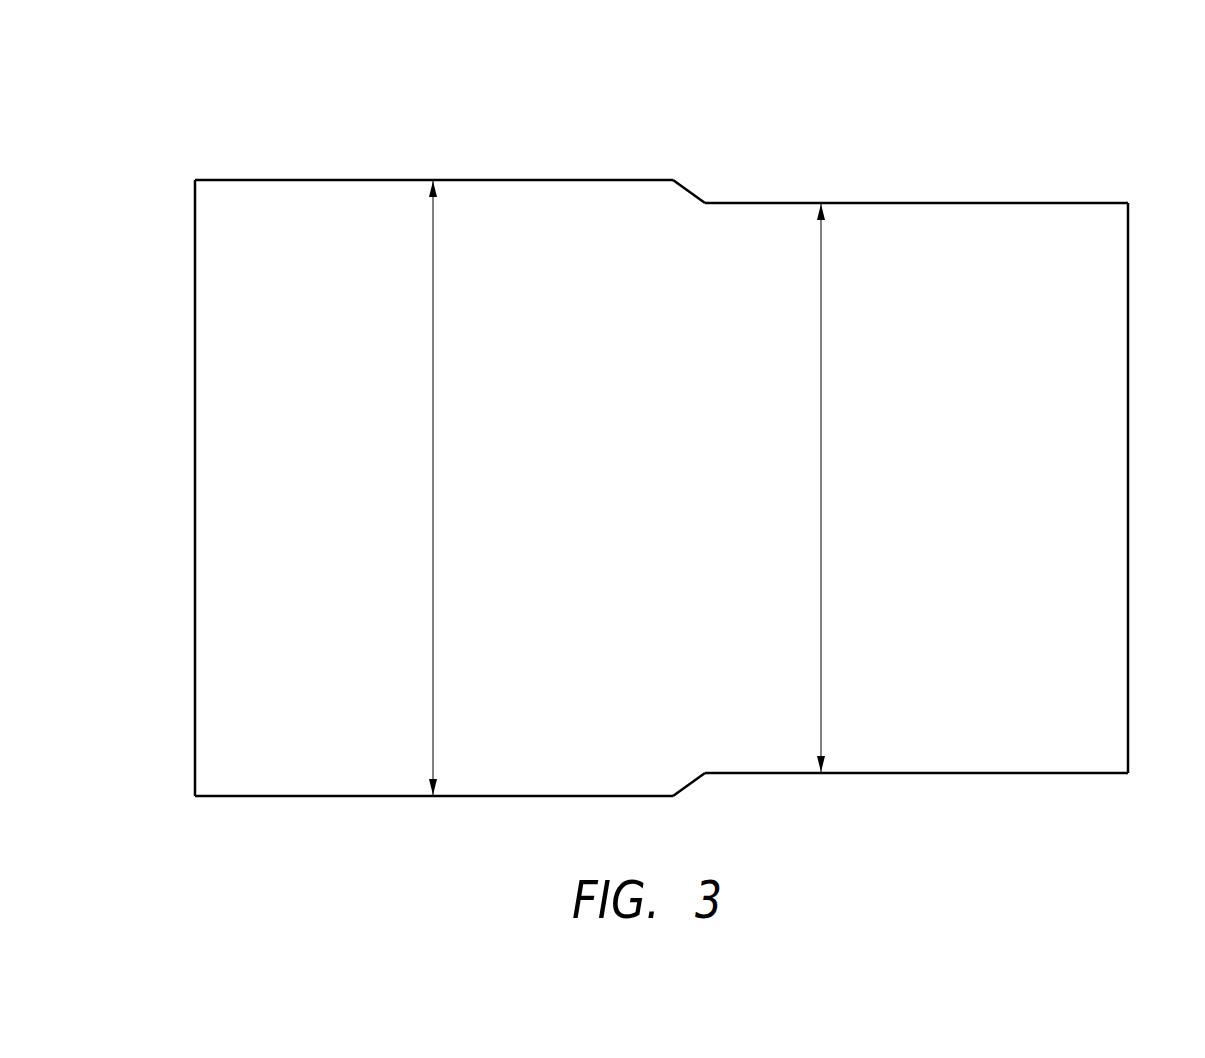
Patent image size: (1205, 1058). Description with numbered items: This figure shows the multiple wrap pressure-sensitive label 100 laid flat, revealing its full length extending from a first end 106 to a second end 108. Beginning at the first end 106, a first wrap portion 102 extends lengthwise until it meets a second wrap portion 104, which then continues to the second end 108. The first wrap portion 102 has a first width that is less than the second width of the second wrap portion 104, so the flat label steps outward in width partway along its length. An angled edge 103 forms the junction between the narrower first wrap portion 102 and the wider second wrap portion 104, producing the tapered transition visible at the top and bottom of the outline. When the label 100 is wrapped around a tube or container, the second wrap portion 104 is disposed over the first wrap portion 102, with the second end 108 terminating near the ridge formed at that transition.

The multiple wrap PS label 100 is at (668, 96).
The first wrap portion 102 is at (883, 203).
The angled edge 103 is at (690, 192).
The second wrap portion 104 is at (510, 180).
The first end 106 is at (1128, 773).
The second end 108 is at (195, 797).